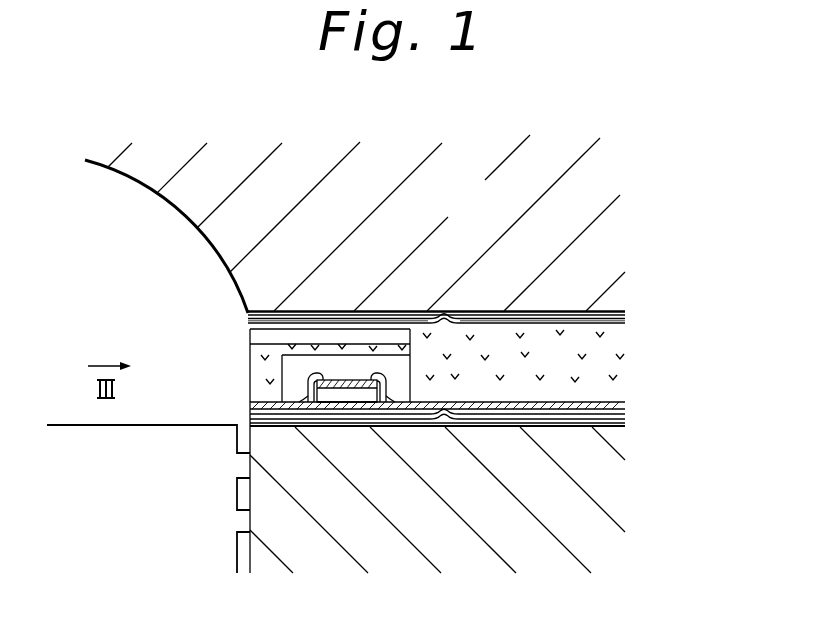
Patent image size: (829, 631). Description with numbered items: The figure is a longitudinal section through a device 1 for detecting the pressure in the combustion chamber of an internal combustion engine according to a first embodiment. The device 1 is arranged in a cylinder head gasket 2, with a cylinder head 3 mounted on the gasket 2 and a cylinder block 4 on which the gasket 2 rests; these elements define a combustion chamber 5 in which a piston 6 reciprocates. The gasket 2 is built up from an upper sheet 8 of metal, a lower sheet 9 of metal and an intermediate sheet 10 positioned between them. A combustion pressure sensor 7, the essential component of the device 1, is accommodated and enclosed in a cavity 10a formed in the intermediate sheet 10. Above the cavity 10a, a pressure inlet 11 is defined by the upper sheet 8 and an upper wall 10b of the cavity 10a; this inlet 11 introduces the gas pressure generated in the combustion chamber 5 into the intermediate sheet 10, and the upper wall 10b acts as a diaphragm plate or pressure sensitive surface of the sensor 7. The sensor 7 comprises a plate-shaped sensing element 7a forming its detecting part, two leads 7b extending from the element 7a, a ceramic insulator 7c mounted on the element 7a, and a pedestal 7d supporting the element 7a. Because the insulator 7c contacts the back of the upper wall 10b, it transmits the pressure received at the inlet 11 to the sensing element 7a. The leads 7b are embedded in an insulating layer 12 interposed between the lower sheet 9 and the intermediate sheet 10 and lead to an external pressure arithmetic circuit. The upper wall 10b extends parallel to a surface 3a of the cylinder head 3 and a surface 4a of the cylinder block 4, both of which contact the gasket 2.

The device for detecting a pressure 1 is at (487, 283).
The cylinder head gasket 2 is at (647, 404).
The cylinder head 3 is at (476, 215).
The surface of the cylinder head 3a is at (625, 320).
The cylinder block 4 is at (467, 510).
The surface of the cylinder block 4a is at (625, 405).
The combustion chamber 5 is at (97, 293).
The piston 6 is at (134, 515).
The combustion pressure sensor 7 is at (296, 375).
The sensing element 7a is at (348, 380).
The leads 7b is at (312, 405).
The insulator 7c is at (341, 380).
The pedestal 7d is at (348, 404).
The upper sheet 8 is at (596, 311).
The lower sheet 9 is at (604, 421).
The intermediate sheet 10 is at (591, 416).
The cavity 10a is at (408, 404).
The upper wall 10b is at (387, 345).
The pressure inlet 11 is at (258, 336).
The insulating layer 12 is at (550, 404).